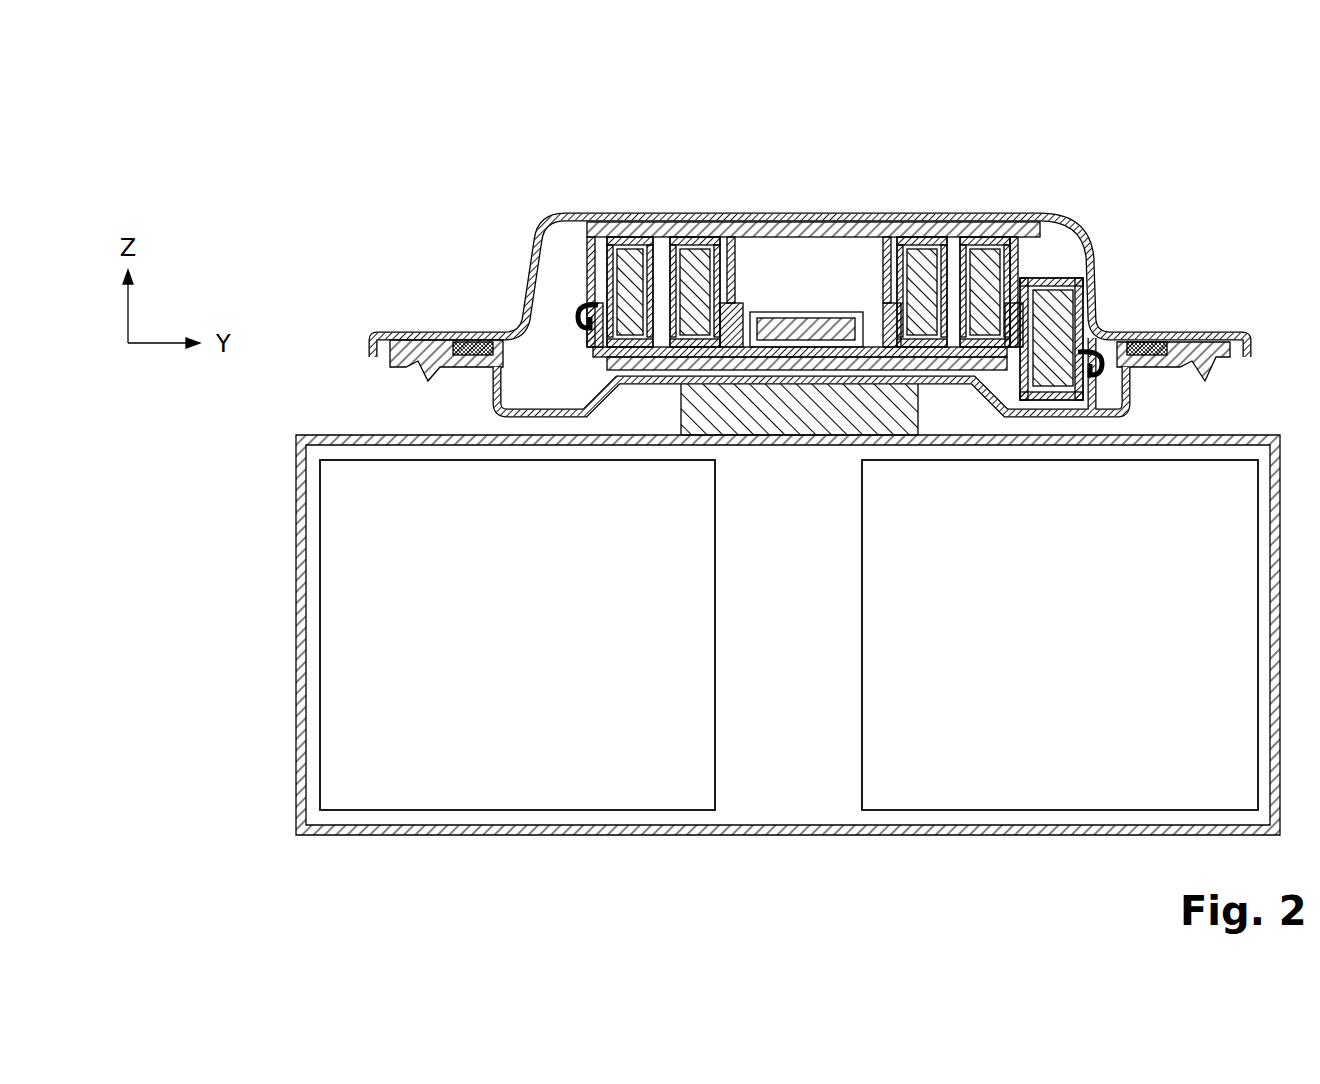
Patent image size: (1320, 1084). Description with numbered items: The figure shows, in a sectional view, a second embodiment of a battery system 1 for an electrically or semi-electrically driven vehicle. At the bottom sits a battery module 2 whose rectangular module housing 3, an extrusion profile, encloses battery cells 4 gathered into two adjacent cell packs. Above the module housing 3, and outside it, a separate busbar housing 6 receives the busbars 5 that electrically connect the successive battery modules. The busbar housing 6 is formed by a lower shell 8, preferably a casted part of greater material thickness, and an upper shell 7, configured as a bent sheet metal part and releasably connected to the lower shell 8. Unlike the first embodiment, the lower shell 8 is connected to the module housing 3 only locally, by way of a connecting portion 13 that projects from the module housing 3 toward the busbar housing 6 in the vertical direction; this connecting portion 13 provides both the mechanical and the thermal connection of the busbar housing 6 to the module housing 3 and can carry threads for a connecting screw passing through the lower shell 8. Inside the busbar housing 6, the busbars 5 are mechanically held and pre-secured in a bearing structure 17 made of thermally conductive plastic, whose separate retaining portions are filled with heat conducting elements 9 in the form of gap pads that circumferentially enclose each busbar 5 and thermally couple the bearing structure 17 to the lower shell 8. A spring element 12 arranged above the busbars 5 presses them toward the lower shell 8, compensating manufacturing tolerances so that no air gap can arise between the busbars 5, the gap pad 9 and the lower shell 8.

The battery system 1 is at (364, 152).
The battery module 2 is at (279, 635).
The module housing 3 is at (785, 830).
The battery cells 4 is at (528, 800).
The busbars 5 is at (1046, 288).
The busbar housing 6 is at (1092, 250).
The upper shell 7 is at (535, 268).
The lower shell 8 is at (492, 389).
The heat conducting elements 9 is at (607, 262).
The spring element 12 is at (844, 230).
The connecting portion 13 is at (790, 420).
The bearing structure 17 is at (750, 333).